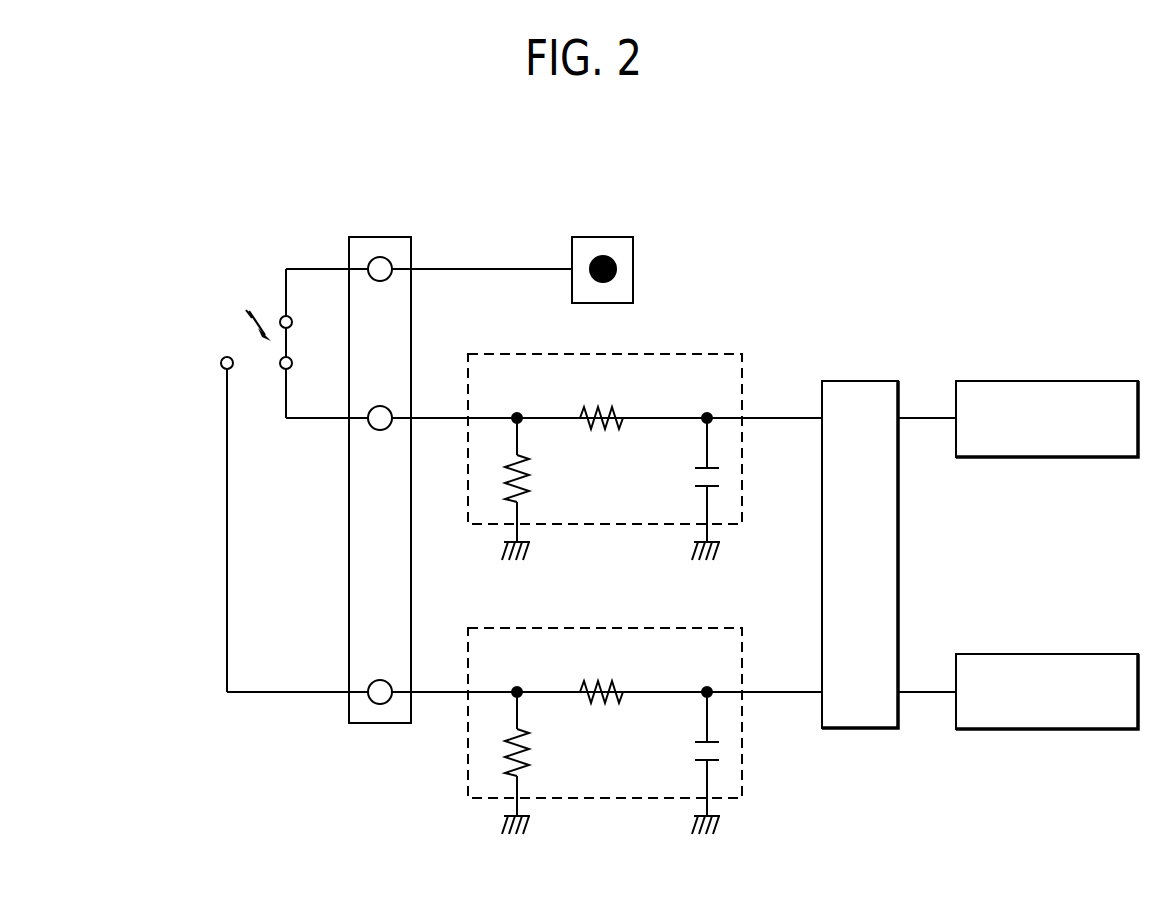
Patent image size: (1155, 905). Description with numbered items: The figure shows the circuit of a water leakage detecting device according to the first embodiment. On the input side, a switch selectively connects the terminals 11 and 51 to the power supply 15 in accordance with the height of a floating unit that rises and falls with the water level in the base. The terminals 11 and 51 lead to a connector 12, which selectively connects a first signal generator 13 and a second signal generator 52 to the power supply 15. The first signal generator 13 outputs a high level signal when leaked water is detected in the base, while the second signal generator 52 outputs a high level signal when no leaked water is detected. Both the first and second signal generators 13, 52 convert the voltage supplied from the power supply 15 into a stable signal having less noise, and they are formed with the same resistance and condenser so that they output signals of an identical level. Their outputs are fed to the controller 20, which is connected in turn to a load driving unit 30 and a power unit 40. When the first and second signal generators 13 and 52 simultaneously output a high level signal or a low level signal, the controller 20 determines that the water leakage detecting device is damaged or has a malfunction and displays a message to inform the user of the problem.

The terminal 11 is at (291, 367).
The connector 12 is at (380, 724).
The first signal generator 13 is at (689, 354).
The power supply 15 is at (603, 248).
The controller 20 is at (860, 718).
The load driving unit 30 is at (1071, 392).
The power unit 40 is at (1047, 718).
The terminal 51 is at (221, 363).
The second signal generator 52 is at (622, 800).